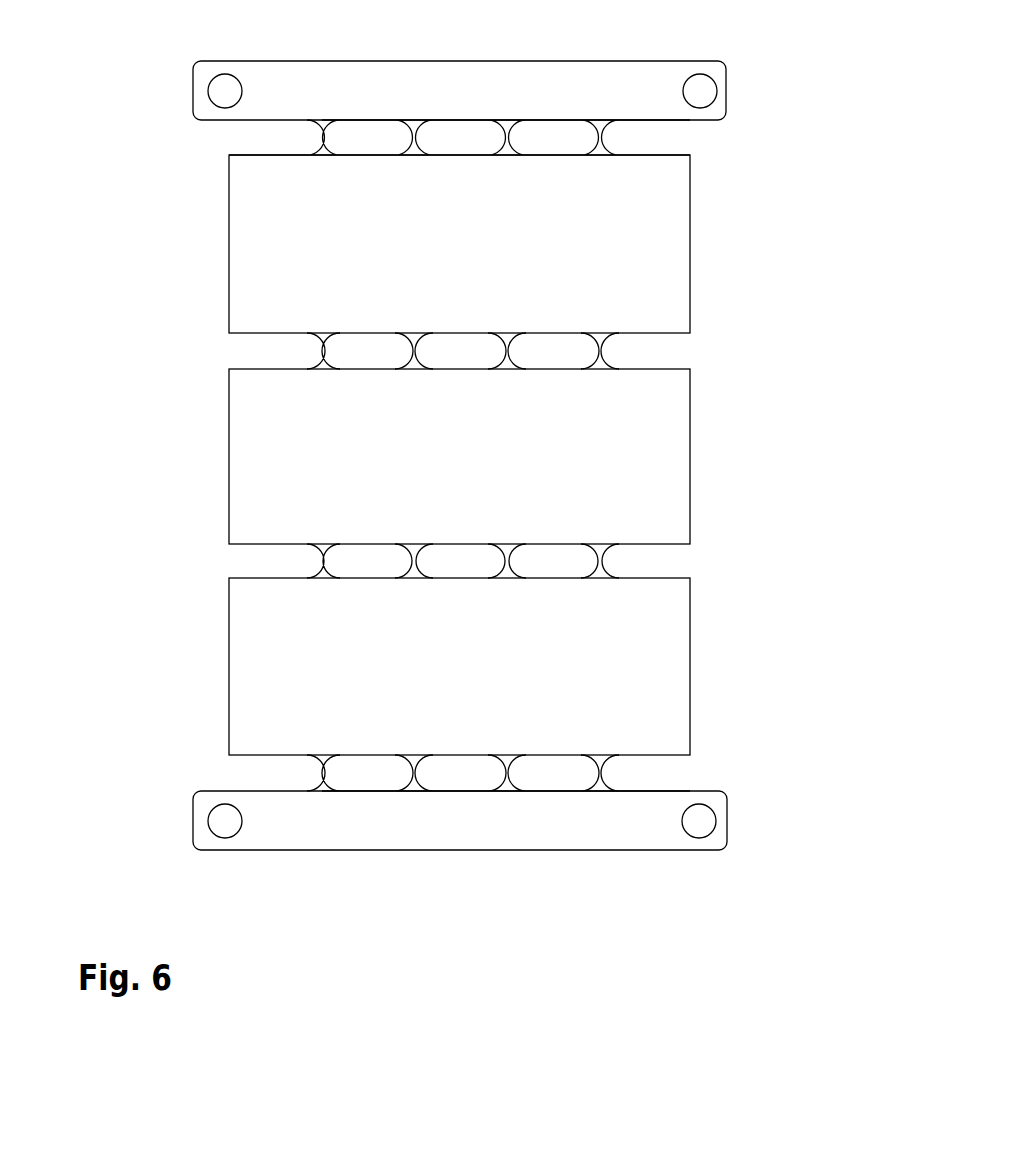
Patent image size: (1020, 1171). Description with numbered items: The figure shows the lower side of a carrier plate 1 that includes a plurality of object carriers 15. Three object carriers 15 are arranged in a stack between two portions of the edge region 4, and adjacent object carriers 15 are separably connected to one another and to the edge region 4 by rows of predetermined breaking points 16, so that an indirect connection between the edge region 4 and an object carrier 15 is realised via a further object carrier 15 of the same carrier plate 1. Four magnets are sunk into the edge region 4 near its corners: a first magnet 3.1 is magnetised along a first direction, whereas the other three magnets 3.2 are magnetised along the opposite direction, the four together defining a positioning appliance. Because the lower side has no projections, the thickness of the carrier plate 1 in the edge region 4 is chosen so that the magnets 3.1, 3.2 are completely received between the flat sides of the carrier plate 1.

The carrier plate 1 is at (807, 65).
The first magnet 3.1 is at (700, 821).
The other magnets 3.2 is at (222, 91).
The edge region 4 is at (648, 103).
The object carrier 15 is at (655, 256).
The predetermined breaking points 16 is at (322, 137).